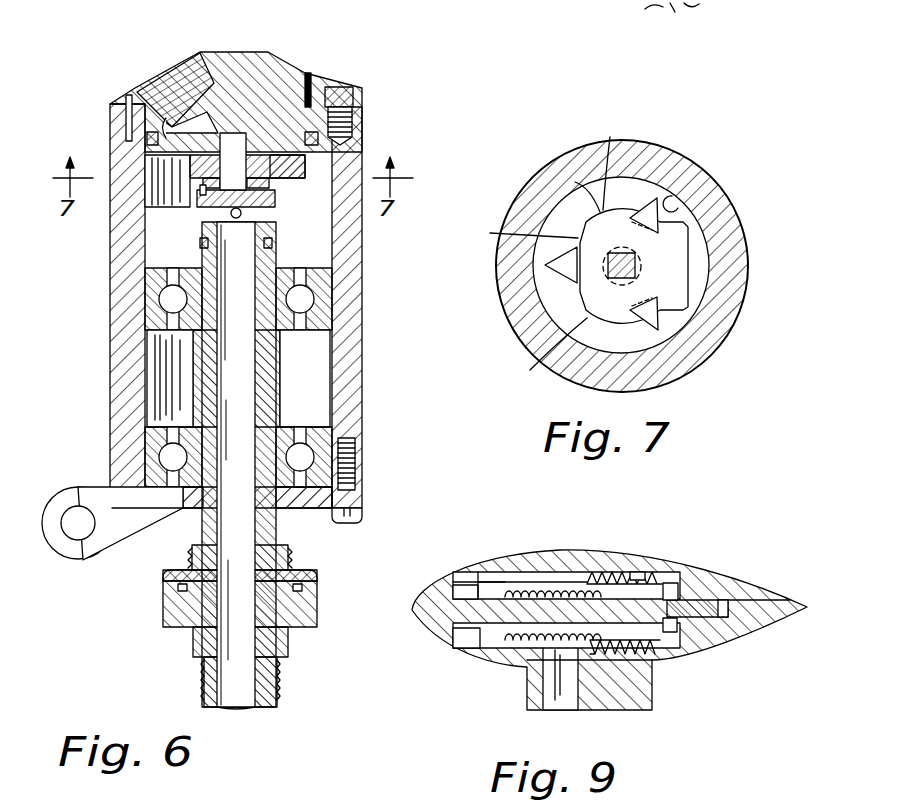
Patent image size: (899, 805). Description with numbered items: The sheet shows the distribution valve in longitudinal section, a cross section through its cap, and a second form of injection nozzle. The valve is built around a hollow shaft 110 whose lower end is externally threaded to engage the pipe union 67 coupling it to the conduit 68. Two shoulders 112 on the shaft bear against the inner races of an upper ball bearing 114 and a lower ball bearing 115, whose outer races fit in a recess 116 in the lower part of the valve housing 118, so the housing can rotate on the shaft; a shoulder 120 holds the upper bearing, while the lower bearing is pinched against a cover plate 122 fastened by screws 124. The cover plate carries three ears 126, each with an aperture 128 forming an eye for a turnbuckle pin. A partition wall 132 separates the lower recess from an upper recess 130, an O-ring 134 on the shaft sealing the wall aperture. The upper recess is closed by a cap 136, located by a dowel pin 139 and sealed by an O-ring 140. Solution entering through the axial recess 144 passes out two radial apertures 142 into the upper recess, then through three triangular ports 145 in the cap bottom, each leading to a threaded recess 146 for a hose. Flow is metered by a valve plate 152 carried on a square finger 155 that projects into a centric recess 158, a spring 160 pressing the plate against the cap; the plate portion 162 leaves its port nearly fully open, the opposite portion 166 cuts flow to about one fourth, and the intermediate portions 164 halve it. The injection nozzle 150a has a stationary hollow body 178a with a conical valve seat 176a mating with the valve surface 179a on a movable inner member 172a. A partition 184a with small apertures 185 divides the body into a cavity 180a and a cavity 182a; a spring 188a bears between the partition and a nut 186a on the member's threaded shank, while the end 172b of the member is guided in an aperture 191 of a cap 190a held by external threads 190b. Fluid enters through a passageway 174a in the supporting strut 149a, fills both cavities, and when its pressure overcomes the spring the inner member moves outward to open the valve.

In FIG. 6, the pipe union 67 is at (172, 606).
In FIG. 6, the conduit 68 is at (278, 679).
In FIG. 6, the hollow shaft 110 is at (197, 526).
In FIG. 6, the shoulders 112 is at (297, 418).
In FIG. 6, the upper ball bearing 114 is at (320, 323).
In FIG. 6, the lower ball bearing 115 is at (323, 438).
In FIG. 6, the recess 116 is at (323, 394).
In FIG. 6, the valve housing 118 is at (112, 282).
In FIG. 7, the valve housing 118 is at (713, 243).
In FIG. 6, the shoulder 120 is at (333, 278).
In FIG. 6, the cover plate 122 is at (358, 500).
In FIG. 6, the screws 124 is at (362, 517).
In FIG. 6, the ears 126 is at (100, 559).
In FIG. 6, the aperture 128 is at (80, 501).
In FIG. 6, the upper recess 130 is at (300, 207).
In FIG. 7, the upper recess 130 is at (680, 207).
In FIG. 6, the partition wall 132 is at (148, 222).
In FIG. 6, the O-ring 134 is at (200, 242).
In FIG. 6, the cap 136 is at (286, 67).
In FIG. 7, the cap 136 is at (587, 200).
In FIG. 6, the dowel pin 139 is at (130, 100).
In FIG. 6, the O-ring 140 is at (150, 140).
In FIG. 6, the radial apertures 142 is at (241, 212).
In FIG. 6, the axial recess 144 is at (253, 528).
In FIG. 6, the triangular ports 145 is at (170, 133).
In FIG. 7, the triangular ports 145 is at (643, 203).
In FIG. 6, the threaded recess 146 is at (190, 84).
In FIG. 6, the valve plate 152 is at (293, 170).
In FIG. 7, the valve plate 152 is at (675, 258).
In FIG. 6, the square finger 155 is at (232, 145).
In FIG. 7, the square finger 155 is at (640, 270).
In FIG. 6, the centric recess 158 is at (310, 88).
In FIG. 6, the spring 160 is at (203, 190).
In FIG. 7, the valve plate portion 162 is at (500, 245).
In FIG. 7, the intermediate valve portions 164 is at (573, 255).
In FIG. 7, the valve plate portion 166 is at (684, 237).
In FIG. 9, the supporting strut 149a is at (647, 693).
In FIG. 9, the injection nozzle 150a is at (527, 640).
In FIG. 9, the inner member 172a is at (453, 633).
In FIG. 9, the end of inner member 172b is at (700, 615).
In FIG. 9, the passageway 174a is at (563, 698).
In FIG. 9, the conical valve seat 176a is at (453, 594).
In FIG. 9, the hollow body 178a is at (632, 575).
In FIG. 9, the valve surface 179a is at (513, 641).
In FIG. 9, the cavity 180a is at (468, 583).
In FIG. 9, the cavity 182a is at (560, 582).
In FIG. 9, the partition 184a is at (508, 580).
In FIG. 9, the small apertures 185 is at (497, 583).
In FIG. 9, the nut 186a is at (653, 632).
In FIG. 9, the spring 188a is at (525, 642).
In FIG. 9, the cap 190a is at (783, 584).
In FIG. 9, the external threads 190b is at (636, 573).
In FIG. 9, the aperture 191 is at (723, 607).